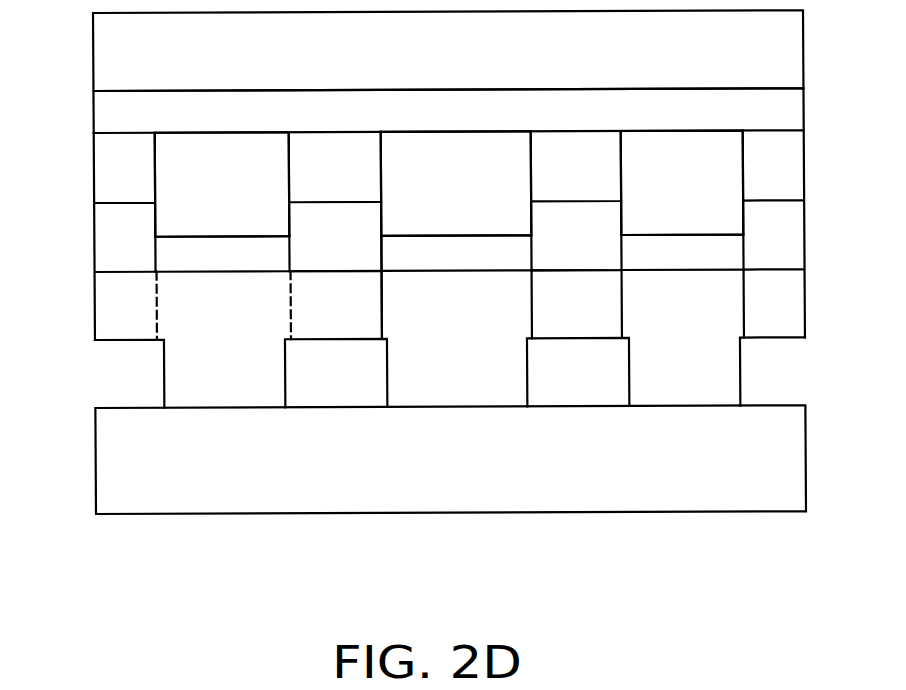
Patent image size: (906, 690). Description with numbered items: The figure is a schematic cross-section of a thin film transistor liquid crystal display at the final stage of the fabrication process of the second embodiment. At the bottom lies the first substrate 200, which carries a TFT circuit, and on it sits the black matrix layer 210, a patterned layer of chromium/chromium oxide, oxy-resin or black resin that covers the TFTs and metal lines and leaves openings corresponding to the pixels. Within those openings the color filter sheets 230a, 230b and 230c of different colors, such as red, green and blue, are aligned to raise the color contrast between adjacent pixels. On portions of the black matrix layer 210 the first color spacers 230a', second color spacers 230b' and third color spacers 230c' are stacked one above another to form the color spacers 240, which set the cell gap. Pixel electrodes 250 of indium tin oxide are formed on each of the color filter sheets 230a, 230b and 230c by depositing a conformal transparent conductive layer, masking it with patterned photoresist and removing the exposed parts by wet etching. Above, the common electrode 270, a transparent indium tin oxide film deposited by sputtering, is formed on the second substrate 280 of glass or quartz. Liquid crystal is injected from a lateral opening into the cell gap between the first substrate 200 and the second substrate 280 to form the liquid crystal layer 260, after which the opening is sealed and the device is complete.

The first substrate 200 is at (788, 482).
The black matrix layer 210 is at (110, 382).
The color filter sheet 230a is at (223, 305).
The color filter sheet 230b is at (456, 287).
The color filter sheet 230c is at (683, 293).
The first color spacers 230a' is at (456, 304).
The second color spacers 230b' is at (455, 236).
The third color spacers 230c' is at (455, 166).
The color spacers 240 is at (83, 175).
The pixel electrodes 250 is at (202, 245).
The liquid crystal layer 260 is at (238, 173).
The common electrode 270 is at (783, 107).
The second substrate 280 is at (783, 43).